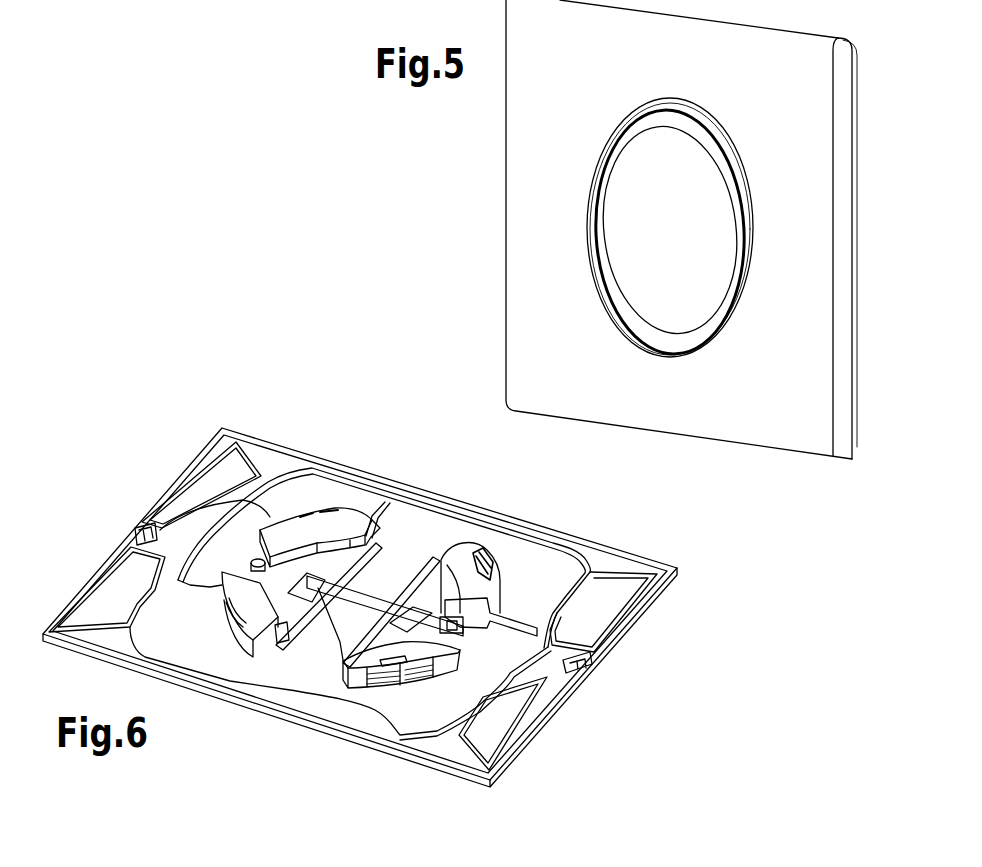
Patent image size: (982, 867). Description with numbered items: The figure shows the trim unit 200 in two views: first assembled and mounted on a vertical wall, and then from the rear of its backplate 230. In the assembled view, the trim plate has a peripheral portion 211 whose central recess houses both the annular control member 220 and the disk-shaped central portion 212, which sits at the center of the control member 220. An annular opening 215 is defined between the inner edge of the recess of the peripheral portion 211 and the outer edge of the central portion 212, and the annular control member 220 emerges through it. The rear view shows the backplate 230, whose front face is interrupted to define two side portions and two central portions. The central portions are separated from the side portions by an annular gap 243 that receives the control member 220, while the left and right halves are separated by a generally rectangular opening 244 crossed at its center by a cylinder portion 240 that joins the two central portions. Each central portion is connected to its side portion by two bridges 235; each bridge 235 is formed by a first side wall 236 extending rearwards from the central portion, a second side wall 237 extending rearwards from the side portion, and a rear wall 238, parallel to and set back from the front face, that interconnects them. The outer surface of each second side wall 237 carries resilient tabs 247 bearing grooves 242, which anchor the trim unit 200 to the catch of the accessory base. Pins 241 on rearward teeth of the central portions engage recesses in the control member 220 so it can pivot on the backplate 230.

In FIG. 5, the trim unit 200 is at (765, 468).
In FIG. 5, the peripheral portion 211 is at (523, 272).
In FIG. 5, the central portion 212 is at (640, 193).
In FIG. 5, the opening 215 is at (690, 96).
In FIG. 5, the annular control member 220 is at (645, 115).
In FIG. 5, the backplate 230 is at (864, 418).
In FIG. 6, the backplate 230 is at (656, 642).
In FIG. 6, the bridge 235 is at (347, 518).
In FIG. 6, the first side wall 236 is at (310, 543).
In FIG. 6, the second side wall 237 is at (178, 496).
In FIG. 6, the rear wall 238 is at (260, 483).
In FIG. 6, the cylinder portion 240 is at (357, 600).
In FIG. 6, the pin 241 is at (437, 635).
In FIG. 6, the grooves 242 is at (423, 684).
In FIG. 6, the annular gap 243 is at (368, 535).
In FIG. 6, the rectangular opening 244 is at (387, 590).
In FIG. 6, the resilient tab 247 is at (500, 570).